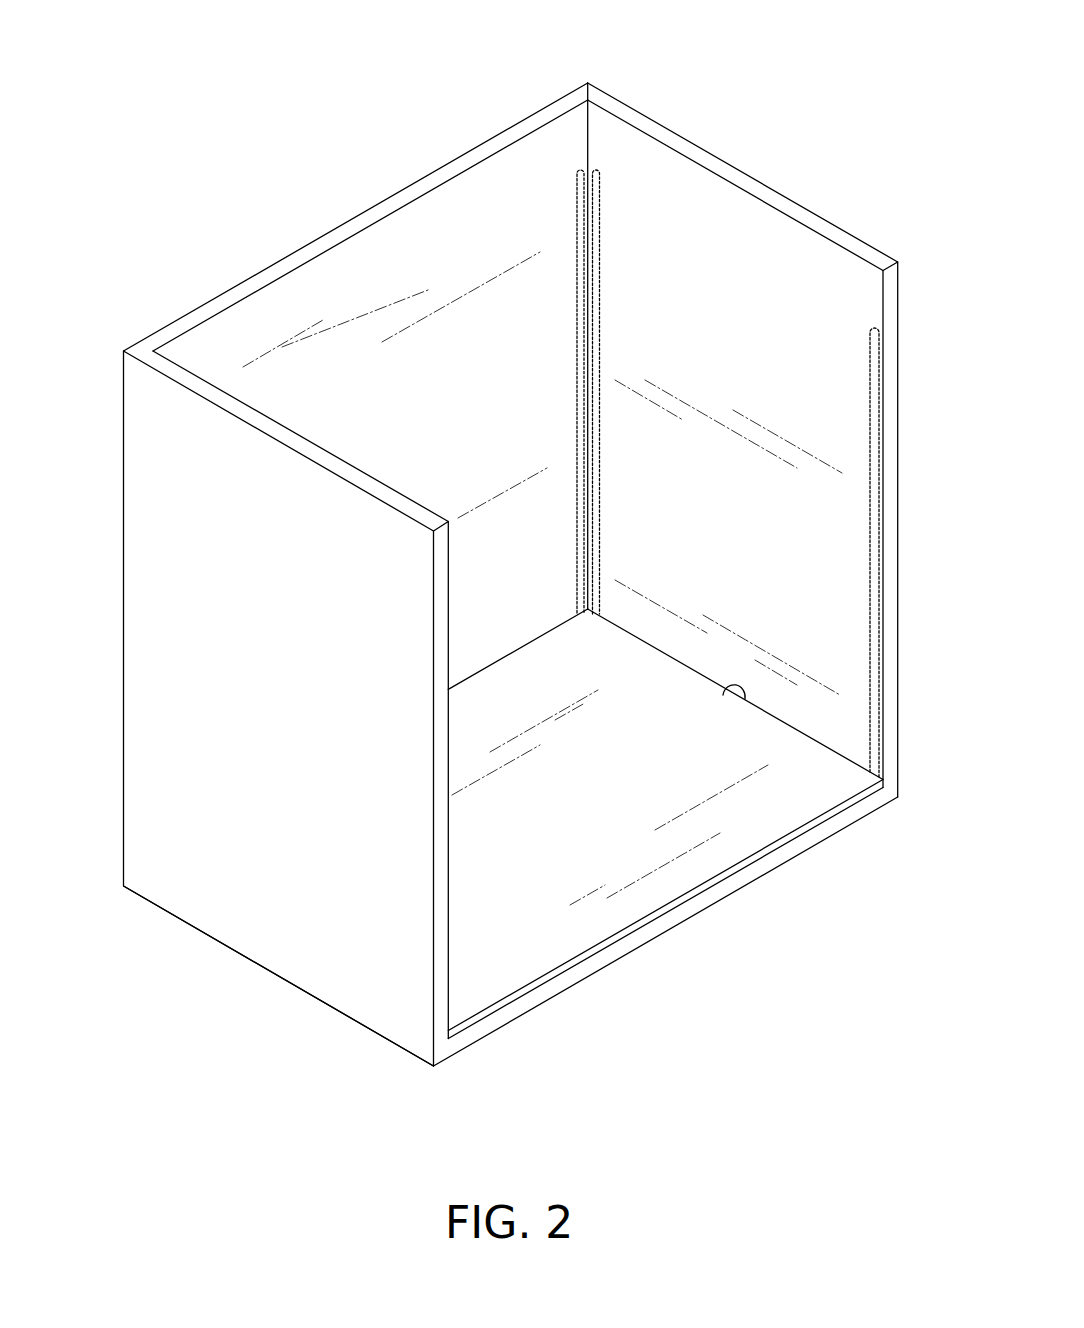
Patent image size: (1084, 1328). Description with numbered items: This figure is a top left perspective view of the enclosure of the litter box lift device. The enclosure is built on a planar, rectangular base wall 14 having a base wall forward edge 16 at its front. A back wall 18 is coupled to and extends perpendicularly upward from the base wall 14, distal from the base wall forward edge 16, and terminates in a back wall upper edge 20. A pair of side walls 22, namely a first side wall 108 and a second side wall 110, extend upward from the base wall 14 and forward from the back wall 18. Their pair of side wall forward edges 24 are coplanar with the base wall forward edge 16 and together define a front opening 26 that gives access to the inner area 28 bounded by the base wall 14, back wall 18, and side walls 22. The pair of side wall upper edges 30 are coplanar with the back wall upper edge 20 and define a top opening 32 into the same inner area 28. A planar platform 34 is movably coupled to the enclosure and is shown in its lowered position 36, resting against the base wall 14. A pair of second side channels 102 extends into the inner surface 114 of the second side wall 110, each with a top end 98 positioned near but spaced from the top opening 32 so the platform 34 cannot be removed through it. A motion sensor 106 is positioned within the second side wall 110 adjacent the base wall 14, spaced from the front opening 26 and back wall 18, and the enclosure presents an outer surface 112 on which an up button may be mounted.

The base wall 14 is at (563, 982).
The base wall forward edge 16 is at (785, 862).
The back wall 18 is at (310, 293).
The back wall upper edge 20 is at (428, 183).
The pair of side walls 22 is at (198, 720).
The pair of side wall forward edges 24 is at (888, 453).
The front opening 26 is at (487, 937).
The inner area 28 is at (402, 429).
The pair of side wall upper edges 30 is at (187, 383).
The top opening 32 is at (507, 155).
The platform 34 is at (615, 912).
The lowered position 36 is at (730, 912).
The top end 98 is at (578, 170).
The pair of second side channels 102 is at (600, 210).
The motion sensor 106 is at (745, 695).
The first side wall 108 is at (193, 492).
The second side wall 110 is at (735, 230).
The outer surface 112 is at (170, 596).
The inner surface 114 is at (776, 290).